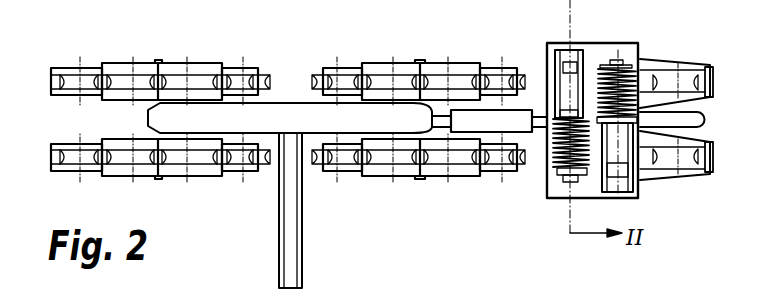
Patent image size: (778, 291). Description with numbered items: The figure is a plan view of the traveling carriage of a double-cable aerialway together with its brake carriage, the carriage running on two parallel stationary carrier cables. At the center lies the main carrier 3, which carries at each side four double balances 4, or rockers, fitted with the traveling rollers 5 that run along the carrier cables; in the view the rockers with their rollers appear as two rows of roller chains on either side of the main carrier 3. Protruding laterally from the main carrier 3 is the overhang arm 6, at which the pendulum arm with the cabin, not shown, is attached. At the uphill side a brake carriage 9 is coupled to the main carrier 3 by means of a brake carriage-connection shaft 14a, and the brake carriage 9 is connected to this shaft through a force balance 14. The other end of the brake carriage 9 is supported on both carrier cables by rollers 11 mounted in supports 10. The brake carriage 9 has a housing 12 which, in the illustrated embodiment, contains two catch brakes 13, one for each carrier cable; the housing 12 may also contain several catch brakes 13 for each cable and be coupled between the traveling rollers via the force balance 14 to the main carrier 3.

The main carrier 3 is at (261, 117).
The double balances 4 is at (232, 176).
The traveling rollers 5 is at (68, 150).
The overhang arm 6 is at (290, 225).
The brake carriage 9 is at (602, 55).
The supports 10 is at (657, 63).
The rollers 11 is at (683, 82).
The housing 12 is at (636, 42).
The catch brakes 13 is at (638, 198).
The force balance 14 is at (472, 124).
The brake carriage-connection shaft 14a is at (436, 115).